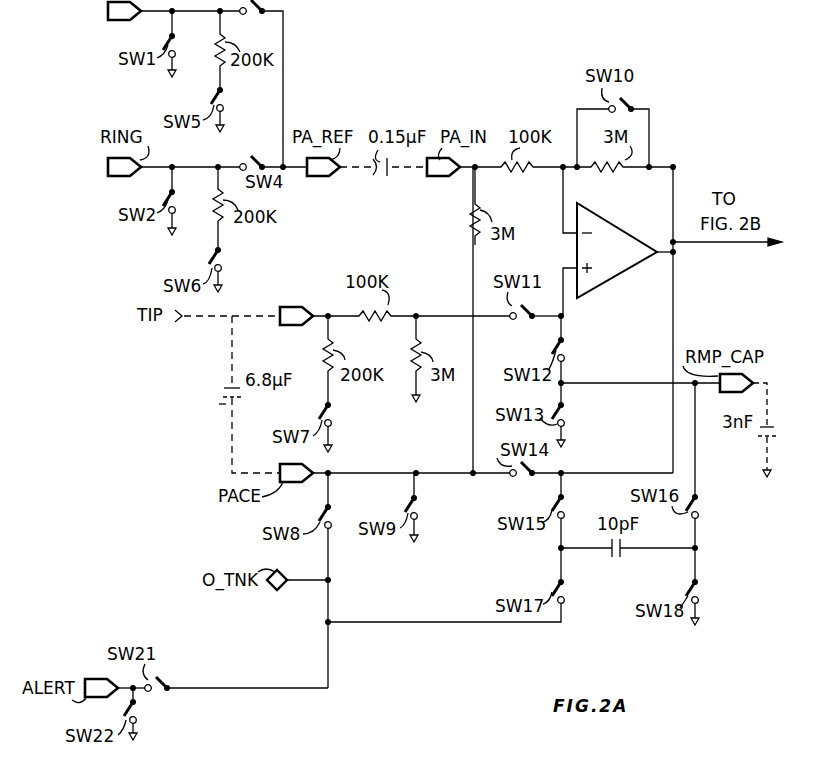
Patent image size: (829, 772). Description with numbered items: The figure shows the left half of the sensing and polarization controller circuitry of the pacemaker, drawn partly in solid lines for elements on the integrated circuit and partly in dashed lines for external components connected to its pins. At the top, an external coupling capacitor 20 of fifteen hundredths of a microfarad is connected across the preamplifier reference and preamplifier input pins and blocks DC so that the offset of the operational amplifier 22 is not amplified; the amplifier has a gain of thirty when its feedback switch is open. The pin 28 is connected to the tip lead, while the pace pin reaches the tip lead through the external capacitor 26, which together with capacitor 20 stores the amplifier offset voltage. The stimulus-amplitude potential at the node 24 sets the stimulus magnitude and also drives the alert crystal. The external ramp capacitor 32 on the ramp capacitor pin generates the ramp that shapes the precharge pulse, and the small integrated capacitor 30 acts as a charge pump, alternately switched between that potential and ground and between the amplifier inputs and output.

The capacitor 20 is at (383, 180).
The operational amplifier 22 is at (606, 224).
The node 24 is at (280, 590).
The capacitor 26 is at (223, 402).
The pin 28 is at (290, 310).
The capacitor 30 is at (617, 558).
The capacitor 32 is at (762, 432).